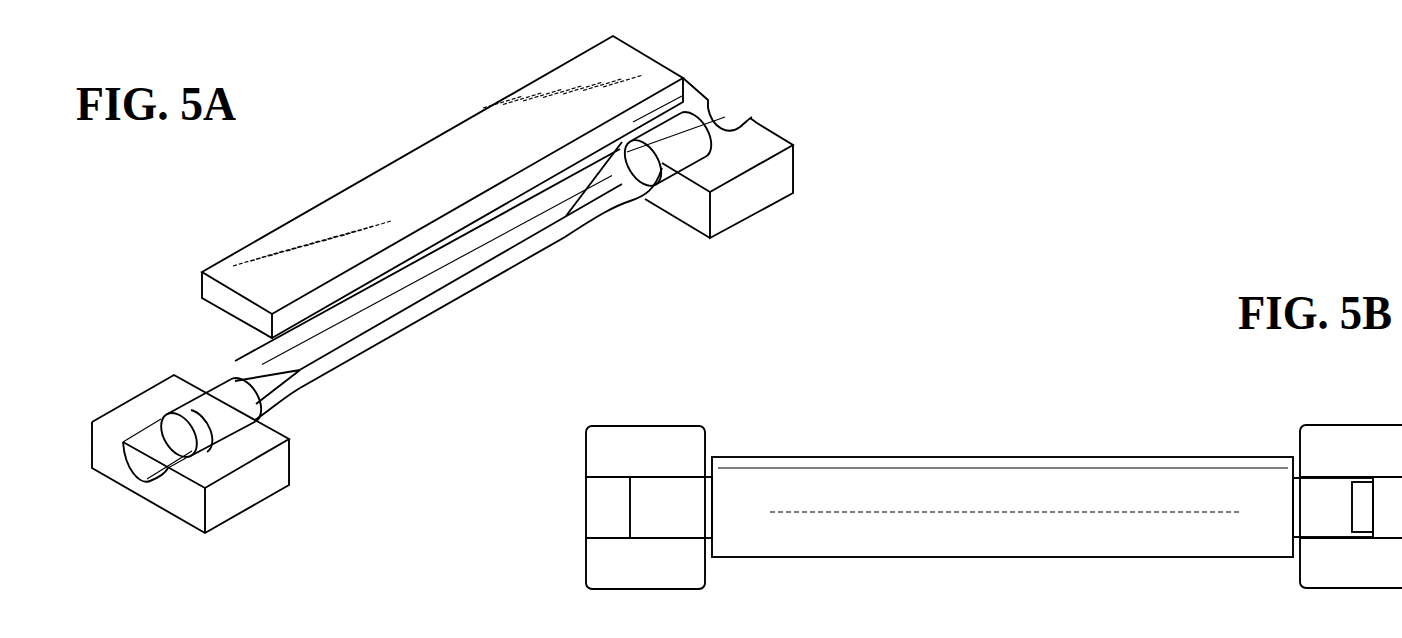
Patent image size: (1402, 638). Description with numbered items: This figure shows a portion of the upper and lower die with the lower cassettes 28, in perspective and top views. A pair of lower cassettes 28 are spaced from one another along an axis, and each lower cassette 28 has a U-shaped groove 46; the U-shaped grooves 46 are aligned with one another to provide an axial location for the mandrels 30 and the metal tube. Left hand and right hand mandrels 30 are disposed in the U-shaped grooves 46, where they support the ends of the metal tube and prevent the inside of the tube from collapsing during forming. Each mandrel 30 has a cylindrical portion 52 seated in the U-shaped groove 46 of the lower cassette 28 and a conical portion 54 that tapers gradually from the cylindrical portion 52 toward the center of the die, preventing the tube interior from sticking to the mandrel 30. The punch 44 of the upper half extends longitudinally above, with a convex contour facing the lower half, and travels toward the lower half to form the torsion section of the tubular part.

In FIG. 5A, the lower cassette 28 is at (260, 503).
In FIG. 5B, the lower cassette 28 is at (604, 437).
In FIG. 5A, the mandrel 30 is at (631, 128).
In FIG. 5B, the mandrel 30 is at (631, 507).
In FIG. 5A, the punch 44 is at (449, 237).
In FIG. 5B, the punch 44 is at (955, 480).
In FIG. 5A, the U-shaped groove 46 is at (157, 473).
In FIG. 5A, the cylindrical portion 52 is at (170, 436).
In FIG. 5A, the conical portion 54 is at (248, 373).